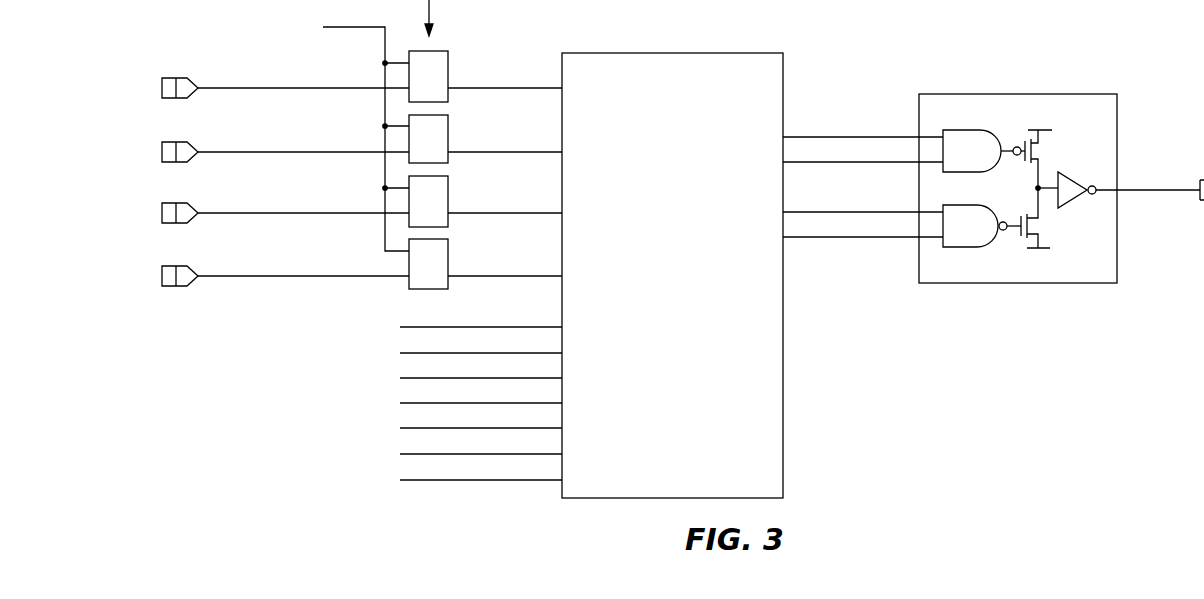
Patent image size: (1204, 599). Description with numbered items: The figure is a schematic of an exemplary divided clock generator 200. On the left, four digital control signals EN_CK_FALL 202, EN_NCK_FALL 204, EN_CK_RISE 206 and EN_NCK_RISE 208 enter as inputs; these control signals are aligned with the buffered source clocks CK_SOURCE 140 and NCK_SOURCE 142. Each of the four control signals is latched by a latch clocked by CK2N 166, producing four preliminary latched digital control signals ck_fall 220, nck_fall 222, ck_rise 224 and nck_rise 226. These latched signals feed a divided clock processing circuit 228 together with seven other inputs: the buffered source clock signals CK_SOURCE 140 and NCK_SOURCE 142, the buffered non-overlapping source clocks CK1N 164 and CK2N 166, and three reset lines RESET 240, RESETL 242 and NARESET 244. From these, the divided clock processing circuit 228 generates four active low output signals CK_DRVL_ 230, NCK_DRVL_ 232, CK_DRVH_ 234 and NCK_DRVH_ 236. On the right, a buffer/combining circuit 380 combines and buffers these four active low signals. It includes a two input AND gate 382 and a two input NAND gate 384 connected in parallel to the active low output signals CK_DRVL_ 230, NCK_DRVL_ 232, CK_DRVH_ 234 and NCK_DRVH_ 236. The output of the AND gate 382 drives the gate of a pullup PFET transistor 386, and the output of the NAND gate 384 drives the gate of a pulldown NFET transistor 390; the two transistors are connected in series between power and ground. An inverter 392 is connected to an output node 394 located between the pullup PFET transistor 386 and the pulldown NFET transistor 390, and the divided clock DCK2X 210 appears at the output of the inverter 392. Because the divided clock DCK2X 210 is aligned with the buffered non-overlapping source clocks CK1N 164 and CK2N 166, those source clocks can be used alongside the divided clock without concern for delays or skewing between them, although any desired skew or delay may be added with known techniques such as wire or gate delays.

The CK_SOURCE 140 is at (400, 327).
The NCK_SOURCE 142 is at (400, 353).
The CK1N 164 is at (400, 378).
The CK2N 166 is at (333, 27).
The divided clock generator 200 is at (270, 357).
The EN_CK_FALL 202 is at (297, 89).
The EN_NCK_FALL 204 is at (297, 153).
The EN_CK_RISE 206 is at (297, 214).
The EN_NCK_RISE 208 is at (297, 277).
The DCK2X 210 is at (1135, 193).
The ck_fall 220 is at (457, 90).
The nck_fall 222 is at (457, 154).
The ck_rise 224 is at (457, 215).
The nck_rise 226 is at (457, 278).
The divided clock processing circuit 228 is at (784, 382).
The CK_DRVL_ 230 is at (934, 136).
The NCK_DRVL_ 232 is at (925, 158).
The CK_DRVH_ 234 is at (923, 217).
The NCK_DRVH_ 236 is at (935, 244).
The RESET 240 is at (400, 428).
The RESETL 242 is at (400, 454).
The NARESET 244 is at (400, 480).
The buffer/combining circuit 380 is at (1048, 94).
The two input AND gate 382 is at (964, 133).
The two input NAND gate 384 is at (965, 248).
The pullup PFET transistor 386 is at (1036, 156).
The pulldown NFET transistor 390 is at (1038, 225).
The inverter 392 is at (1064, 176).
The output node 394 is at (1037, 188).